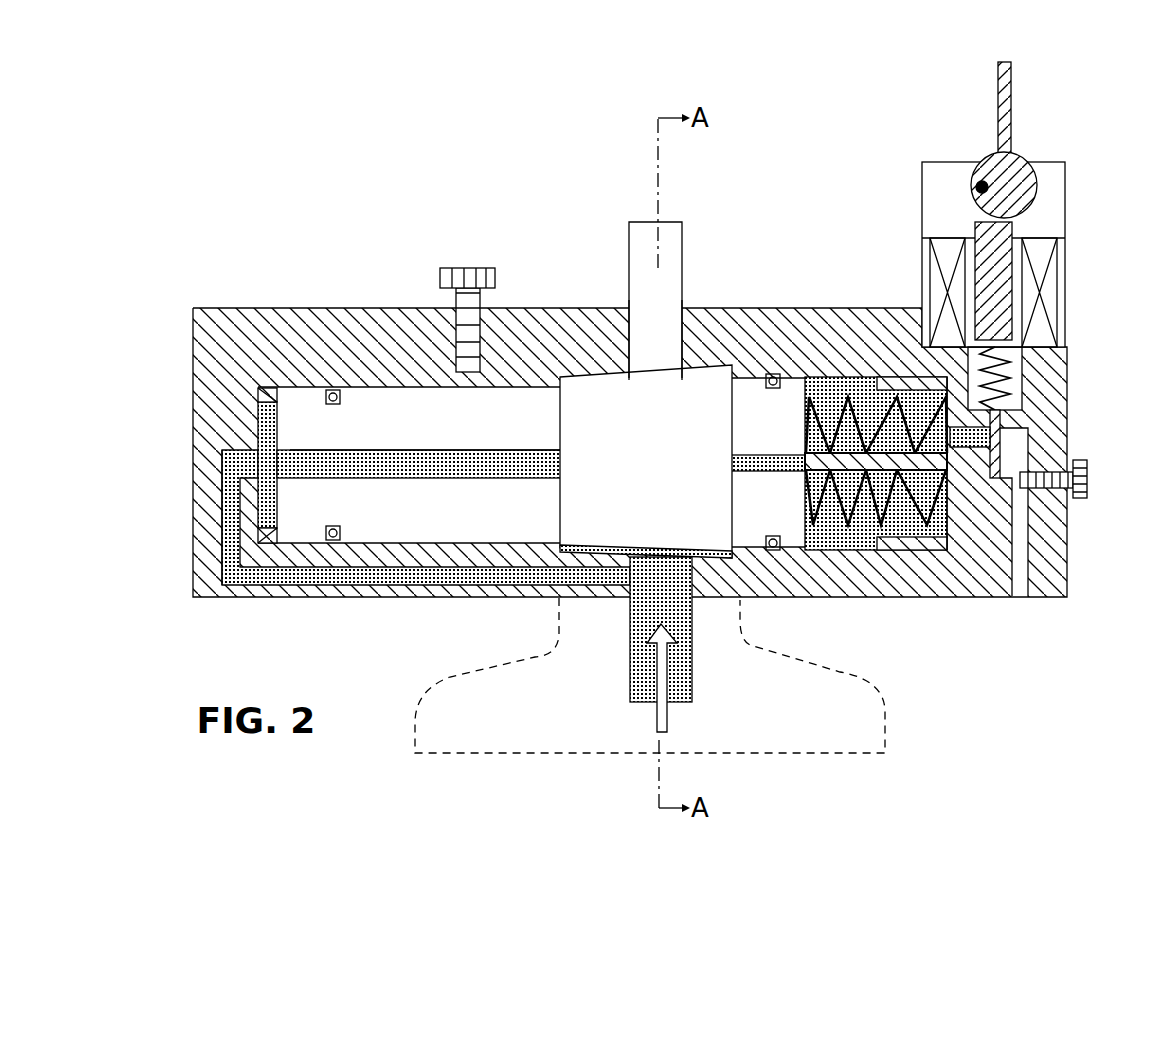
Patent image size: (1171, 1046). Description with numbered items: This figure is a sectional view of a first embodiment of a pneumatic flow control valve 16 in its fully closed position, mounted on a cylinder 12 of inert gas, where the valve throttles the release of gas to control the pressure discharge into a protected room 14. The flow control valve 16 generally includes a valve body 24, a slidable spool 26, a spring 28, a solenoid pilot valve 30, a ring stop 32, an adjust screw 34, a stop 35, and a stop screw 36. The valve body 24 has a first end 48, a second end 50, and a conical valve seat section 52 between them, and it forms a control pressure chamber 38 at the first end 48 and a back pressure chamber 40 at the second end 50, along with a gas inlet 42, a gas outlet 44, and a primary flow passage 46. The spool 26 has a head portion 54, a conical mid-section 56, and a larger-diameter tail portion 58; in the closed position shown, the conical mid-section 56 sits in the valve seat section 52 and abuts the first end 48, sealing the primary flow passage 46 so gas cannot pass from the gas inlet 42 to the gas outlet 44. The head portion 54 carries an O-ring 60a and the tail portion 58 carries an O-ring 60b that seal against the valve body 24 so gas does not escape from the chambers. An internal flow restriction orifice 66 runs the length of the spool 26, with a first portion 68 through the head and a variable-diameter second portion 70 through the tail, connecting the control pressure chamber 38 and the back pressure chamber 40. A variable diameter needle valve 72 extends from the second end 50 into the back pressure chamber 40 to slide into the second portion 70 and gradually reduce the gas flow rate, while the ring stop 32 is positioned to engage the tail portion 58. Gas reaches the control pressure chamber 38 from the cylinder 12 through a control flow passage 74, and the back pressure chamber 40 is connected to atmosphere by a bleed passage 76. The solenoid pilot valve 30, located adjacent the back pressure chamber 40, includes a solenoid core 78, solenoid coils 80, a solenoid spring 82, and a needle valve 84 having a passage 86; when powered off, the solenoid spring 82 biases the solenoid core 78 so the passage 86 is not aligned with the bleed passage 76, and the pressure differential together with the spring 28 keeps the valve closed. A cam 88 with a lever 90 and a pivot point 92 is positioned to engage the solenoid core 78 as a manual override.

The cylinder 12 is at (883, 718).
The protected room 14 is at (786, 232).
The flow control valve 16 is at (494, 108).
The valve body 24 is at (303, 382).
The slidable spool 26 is at (748, 378).
The spring 28 is at (945, 568).
The solenoid pilot valve 30 is at (1067, 195).
The ring stop 32 is at (897, 378).
The adjust screw 34 is at (1090, 478).
The stop 35 is at (255, 392).
The stop screw 36 is at (467, 268).
The control pressure chamber 38 is at (270, 517).
The back pressure chamber 40 is at (866, 540).
The gas inlet 42 is at (690, 683).
The gas outlet 44 is at (680, 238).
The primary flow passage 46 is at (612, 373).
The first end 48 is at (289, 556).
The second end 50 is at (834, 562).
The valve seat section 52 is at (605, 556).
The head portion 54 is at (398, 570).
The conical mid-section 56 is at (578, 392).
The tail portion 58 is at (750, 555).
The O-ring 60a is at (333, 390).
The O-ring 60b is at (778, 374).
The internal flow restriction orifice 66 is at (402, 446).
The first portion of internal orifice 68 is at (280, 465).
The second portion of internal orifice 70 is at (712, 462).
The needle valve 72 is at (994, 484).
The control flow passage 74 is at (222, 550).
The bleed passage 76 is at (1018, 449).
The solenoid core 78 is at (995, 300).
The solenoid coils 80 is at (1055, 262).
The solenoid spring 82 is at (1008, 387).
The needle valve 84 is at (1032, 547).
The passage 86 is at (1001, 418).
The cam 88 is at (1014, 153).
The lever 90 is at (1011, 75).
The pivot point 92 is at (980, 183).